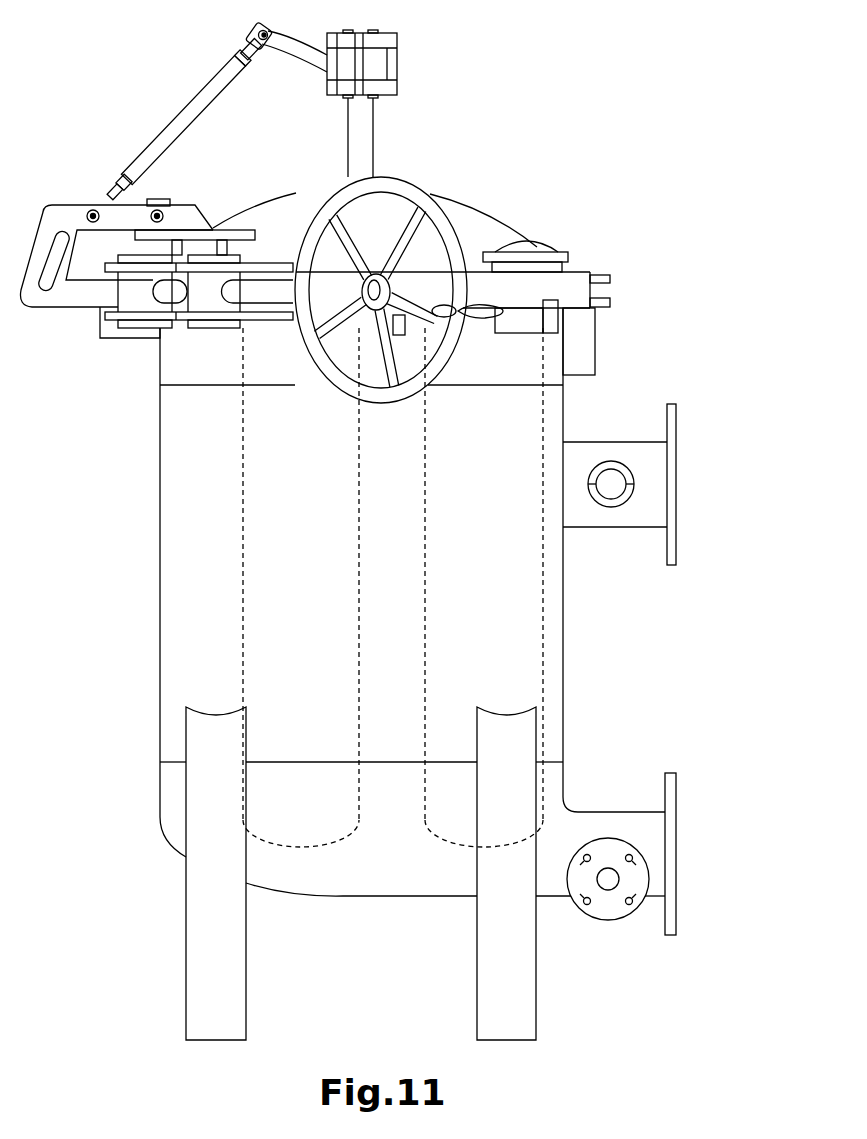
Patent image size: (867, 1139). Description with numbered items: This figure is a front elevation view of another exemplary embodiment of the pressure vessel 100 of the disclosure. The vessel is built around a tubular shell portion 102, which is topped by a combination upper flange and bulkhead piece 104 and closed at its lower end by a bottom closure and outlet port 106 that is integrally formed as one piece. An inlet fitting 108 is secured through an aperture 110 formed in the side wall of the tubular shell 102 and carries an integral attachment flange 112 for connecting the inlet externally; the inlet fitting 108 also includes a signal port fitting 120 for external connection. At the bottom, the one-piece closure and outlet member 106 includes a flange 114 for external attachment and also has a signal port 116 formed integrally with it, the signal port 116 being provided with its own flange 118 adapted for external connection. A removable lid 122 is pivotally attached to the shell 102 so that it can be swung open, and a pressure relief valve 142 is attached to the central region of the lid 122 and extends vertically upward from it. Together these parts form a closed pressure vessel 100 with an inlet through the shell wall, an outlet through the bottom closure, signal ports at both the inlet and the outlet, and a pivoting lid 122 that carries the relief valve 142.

The pressure vessel 100 is at (614, 216).
The tubular shell portion 102 is at (148, 562).
The combination upper flange and bulkhead piece 104 is at (148, 366).
The bottom closure and outlet port 106 is at (158, 853).
The inlet fitting 108 is at (622, 434).
The aperture 110 is at (564, 510).
The attachment flange 112 is at (677, 428).
The flange 114 is at (677, 790).
The signal port 116 is at (579, 908).
The flange 118 is at (623, 918).
The signal port fitting 120 is at (630, 500).
The removable lid 122 is at (478, 192).
The pressure relief valve 142 is at (418, 68).